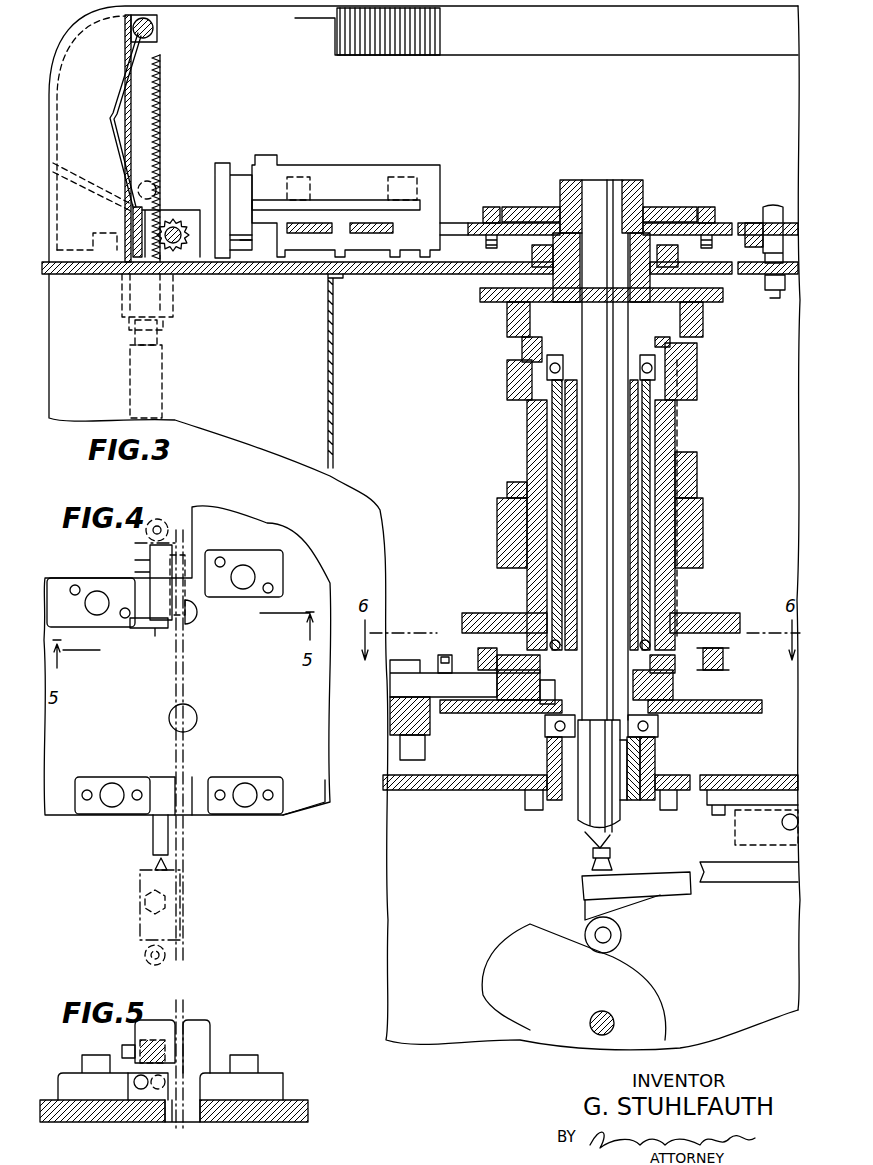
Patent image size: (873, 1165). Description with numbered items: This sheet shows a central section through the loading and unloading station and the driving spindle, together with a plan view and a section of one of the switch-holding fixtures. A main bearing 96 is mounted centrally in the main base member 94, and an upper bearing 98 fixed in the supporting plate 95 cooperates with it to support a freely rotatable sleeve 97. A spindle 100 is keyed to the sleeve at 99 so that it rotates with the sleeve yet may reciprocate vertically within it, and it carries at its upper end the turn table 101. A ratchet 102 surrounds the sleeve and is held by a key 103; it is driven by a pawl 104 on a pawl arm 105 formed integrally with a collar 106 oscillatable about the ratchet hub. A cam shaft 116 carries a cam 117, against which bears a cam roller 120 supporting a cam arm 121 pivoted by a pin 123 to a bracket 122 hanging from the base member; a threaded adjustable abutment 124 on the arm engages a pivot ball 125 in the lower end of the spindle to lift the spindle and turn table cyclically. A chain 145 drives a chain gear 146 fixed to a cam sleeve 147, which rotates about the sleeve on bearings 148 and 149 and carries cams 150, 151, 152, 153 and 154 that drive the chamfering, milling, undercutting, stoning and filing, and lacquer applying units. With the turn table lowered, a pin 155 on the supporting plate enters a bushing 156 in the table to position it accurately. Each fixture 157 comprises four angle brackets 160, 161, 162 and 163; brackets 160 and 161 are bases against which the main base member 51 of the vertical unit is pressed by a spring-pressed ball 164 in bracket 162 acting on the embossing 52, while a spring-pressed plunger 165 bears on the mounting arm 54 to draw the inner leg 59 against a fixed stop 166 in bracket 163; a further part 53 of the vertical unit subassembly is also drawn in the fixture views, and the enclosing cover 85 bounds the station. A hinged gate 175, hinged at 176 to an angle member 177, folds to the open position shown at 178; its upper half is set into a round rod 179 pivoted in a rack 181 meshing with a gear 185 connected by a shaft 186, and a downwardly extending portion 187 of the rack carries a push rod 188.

In FIG. 3, the main base member of the vertical unit 51 is at (332, 168).
In FIG. 4, the main base member of the vertical unit 51 is at (187, 664).
In FIG. 5, the main base member of the vertical unit 51 is at (188, 1000).
In FIG. 5, the embossing 52 is at (180, 1075).
In FIG. 4, the lever member 53 is at (185, 940).
In FIG. 4, the mounting arm 54 is at (150, 554).
In FIG. 4, the inner leg 59 is at (143, 876).
In FIG. 3, the housing cover 85 is at (49, 78).
In FIG. 3, the main base member 94 is at (430, 790).
In FIG. 3, the supporting plate 95 is at (365, 274).
In FIG. 3, the main bearing 96 is at (547, 752).
In FIG. 3, the sleeve 97 is at (640, 758).
In FIG. 3, the upper bearing 98 is at (555, 235).
In FIG. 3, the key 99 is at (635, 770).
In FIG. 3, the spindle 100 is at (592, 808).
In FIG. 3, the turn table 101 is at (475, 222).
In FIG. 4, the turn table 101 is at (290, 800).
In FIG. 5, the turn table 101 is at (255, 1118).
In FIG. 3, the ratchet 102 is at (735, 702).
In FIG. 3, the key 103 is at (545, 706).
In FIG. 3, the pawl 104 is at (390, 706).
In FIG. 3, the pawl arm 105 is at (458, 670).
In FIG. 3, the collar 106 is at (675, 686).
In FIG. 3, the cam shaft 116 is at (614, 1023).
In FIG. 3, the cam 117 is at (632, 975).
In FIG. 3, the cam roller 120 is at (595, 922).
In FIG. 3, the cam arm 121 is at (718, 878).
In FIG. 3, the bracket 122 is at (735, 798).
In FIG. 3, the pin 123 is at (784, 815).
In FIG. 3, the threaded adjustable abutment 124 is at (612, 862).
In FIG. 3, the pivot ball 125 is at (588, 840).
In FIG. 3, the chain 145 is at (725, 663).
In FIG. 3, the chain gear 146 is at (510, 655).
In FIG. 3, the cam sleeve 147 is at (512, 522).
In FIG. 3, the bearing 148 is at (660, 640).
In FIG. 3, the bearing 149 is at (550, 369).
In FIG. 3, the cam 150 is at (722, 614).
In FIG. 3, the cam 151 is at (704, 532).
In FIG. 3, the cam 152 is at (700, 466).
In FIG. 3, the cam 153 is at (698, 372).
In FIG. 3, the cam 154 is at (706, 300).
In FIG. 3, the pin 155 is at (772, 208).
In FIG. 3, the bushing 156 is at (753, 224).
In FIG. 4, the fixture 157 is at (220, 540).
In FIG. 4, the angle bracket 160 is at (236, 568).
In FIG. 5, the angle bracket 160 is at (195, 1035).
In FIG. 4, the angle bracket 161 is at (230, 780).
In FIG. 4, the angle bracket 162 is at (78, 578).
In FIG. 5, the angle bracket 162 is at (68, 1073).
In FIG. 4, the angle bracket 163 is at (125, 780).
In FIG. 4, the spring-pressed ball 164 is at (192, 608).
In FIG. 5, the spring-pressed ball 164 is at (185, 1055).
In FIG. 4, the spring-pressed plunger 165 is at (150, 574).
In FIG. 4, the fixed stop 166 is at (155, 838).
In FIG. 3, the hinged gate 175 is at (118, 92).
In FIG. 3, the hinge 176 is at (133, 209).
In FIG. 3, the angle member 177 is at (135, 228).
In FIG. 3, the open position of gate 178 is at (96, 142).
In FIG. 3, the round rod 179 is at (153, 29).
In FIG. 3, the rack 181 is at (148, 52).
In FIG. 3, the gear 185 is at (176, 219).
In FIG. 3, the shaft 186 is at (178, 240).
In FIG. 3, the downwardly extending portion 187 is at (168, 320).
In FIG. 3, the push rod 188 is at (160, 373).